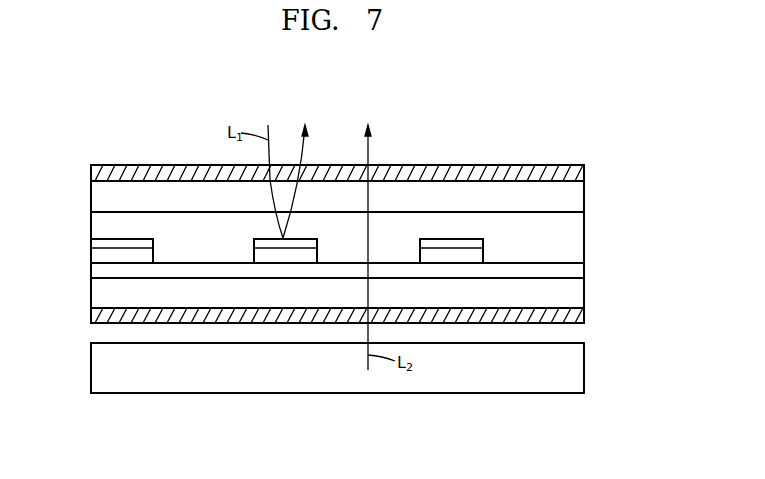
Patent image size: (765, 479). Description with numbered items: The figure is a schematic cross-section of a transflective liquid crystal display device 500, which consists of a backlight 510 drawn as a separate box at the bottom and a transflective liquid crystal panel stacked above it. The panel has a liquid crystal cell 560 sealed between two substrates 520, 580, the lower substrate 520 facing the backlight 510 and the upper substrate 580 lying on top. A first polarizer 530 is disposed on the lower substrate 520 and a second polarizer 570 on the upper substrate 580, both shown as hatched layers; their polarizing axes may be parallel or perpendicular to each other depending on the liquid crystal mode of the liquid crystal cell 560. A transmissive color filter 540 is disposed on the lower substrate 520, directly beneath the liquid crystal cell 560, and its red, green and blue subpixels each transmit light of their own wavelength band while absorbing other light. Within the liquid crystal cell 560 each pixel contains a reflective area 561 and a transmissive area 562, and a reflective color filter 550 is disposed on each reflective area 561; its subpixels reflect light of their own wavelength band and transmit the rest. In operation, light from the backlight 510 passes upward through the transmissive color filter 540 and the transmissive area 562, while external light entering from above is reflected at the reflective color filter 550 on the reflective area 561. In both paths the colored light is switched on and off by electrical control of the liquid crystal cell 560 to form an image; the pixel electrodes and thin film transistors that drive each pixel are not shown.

The transflective liquid crystal display device 500 is at (545, 130).
The backlight 510 is at (584, 369).
The substrate 520 is at (584, 293).
The first polarizer 530 is at (584, 317).
The transmissive color filter 540 is at (584, 271).
The reflective color filter 550 is at (91, 242).
The liquid crystal cell 560 is at (584, 241).
The reflective area 561 is at (137, 236).
The transmissive area 562 is at (220, 260).
The second polarizer 570 is at (584, 175).
The substrate 580 is at (584, 199).